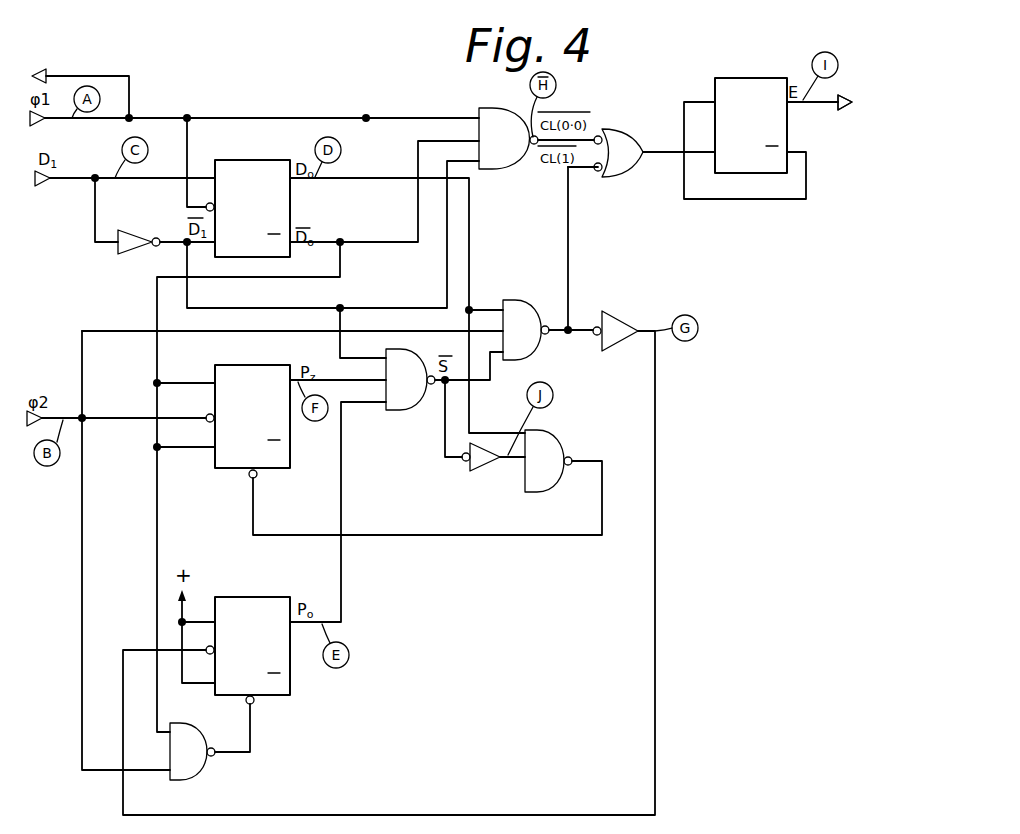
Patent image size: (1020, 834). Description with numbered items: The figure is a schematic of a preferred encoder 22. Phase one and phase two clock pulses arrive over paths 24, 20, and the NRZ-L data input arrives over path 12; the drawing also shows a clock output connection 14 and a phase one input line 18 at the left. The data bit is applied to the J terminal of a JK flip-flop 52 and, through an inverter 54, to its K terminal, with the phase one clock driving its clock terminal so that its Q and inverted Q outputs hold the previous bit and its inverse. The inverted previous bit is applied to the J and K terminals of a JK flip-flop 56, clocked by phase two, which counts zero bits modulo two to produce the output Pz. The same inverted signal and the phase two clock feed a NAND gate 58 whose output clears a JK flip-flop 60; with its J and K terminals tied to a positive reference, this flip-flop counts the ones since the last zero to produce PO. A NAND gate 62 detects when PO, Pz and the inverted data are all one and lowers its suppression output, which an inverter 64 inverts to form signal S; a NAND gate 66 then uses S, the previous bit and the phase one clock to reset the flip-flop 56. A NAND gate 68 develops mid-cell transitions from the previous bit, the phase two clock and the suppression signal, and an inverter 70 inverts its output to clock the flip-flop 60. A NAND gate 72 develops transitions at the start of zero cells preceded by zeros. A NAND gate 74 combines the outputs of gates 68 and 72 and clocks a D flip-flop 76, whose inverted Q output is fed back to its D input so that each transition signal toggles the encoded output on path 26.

The path 12 is at (72, 180).
The clock output line 14 is at (90, 76).
The phase 1 clock input line 18 is at (106, 120).
The path 20 is at (108, 420).
The encoder 22 is at (312, 84).
The path 24 is at (167, 117).
The path 26 is at (823, 105).
The JK flip-flop 52 is at (250, 160).
The inverter 54 is at (125, 255).
The JK flip-flop 56 is at (228, 470).
The NAND gate 58 is at (202, 770).
The JK flip-flop 60 is at (290, 695).
The NAND gate 62 is at (405, 411).
The inverter 64 is at (487, 468).
The NAND gate 66 is at (553, 432).
The NAND gate 68 is at (522, 300).
The inverter 70 is at (618, 316).
The NAND gate 72 is at (513, 108).
The NAND gate 74 is at (622, 128).
The D flip-flop 76 is at (740, 78).